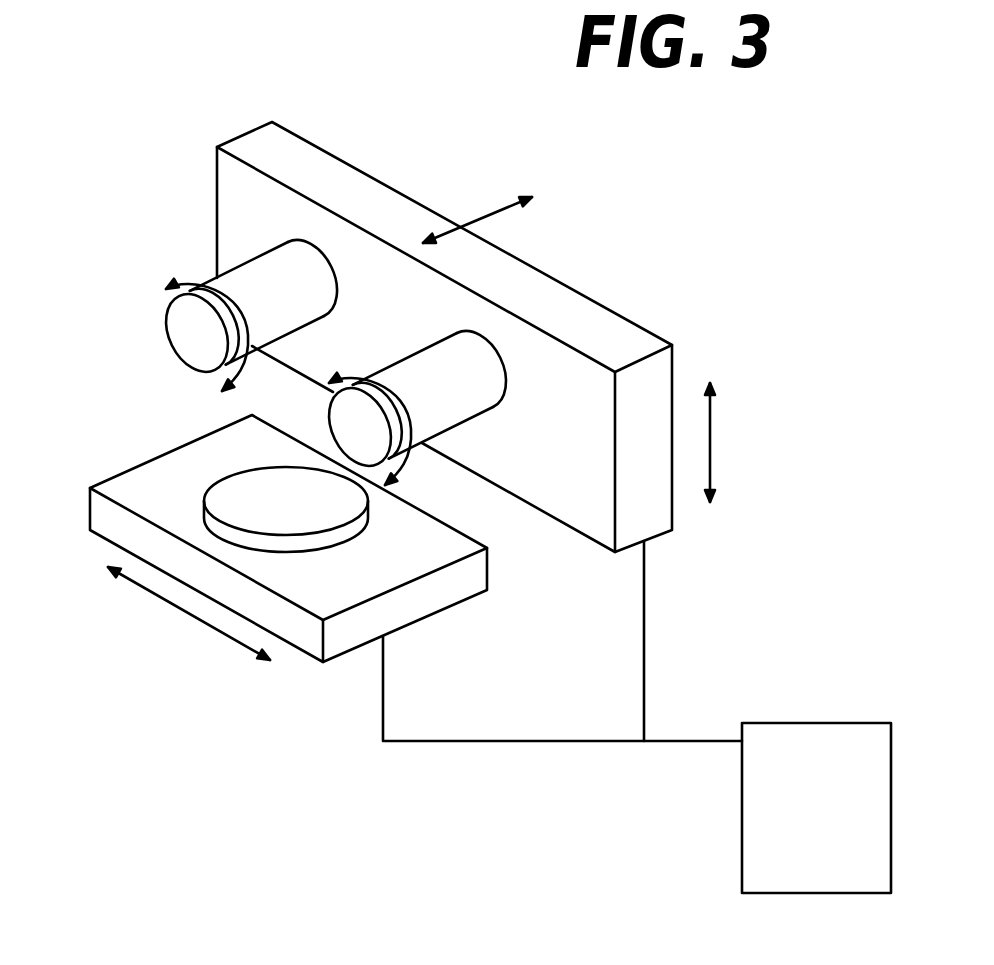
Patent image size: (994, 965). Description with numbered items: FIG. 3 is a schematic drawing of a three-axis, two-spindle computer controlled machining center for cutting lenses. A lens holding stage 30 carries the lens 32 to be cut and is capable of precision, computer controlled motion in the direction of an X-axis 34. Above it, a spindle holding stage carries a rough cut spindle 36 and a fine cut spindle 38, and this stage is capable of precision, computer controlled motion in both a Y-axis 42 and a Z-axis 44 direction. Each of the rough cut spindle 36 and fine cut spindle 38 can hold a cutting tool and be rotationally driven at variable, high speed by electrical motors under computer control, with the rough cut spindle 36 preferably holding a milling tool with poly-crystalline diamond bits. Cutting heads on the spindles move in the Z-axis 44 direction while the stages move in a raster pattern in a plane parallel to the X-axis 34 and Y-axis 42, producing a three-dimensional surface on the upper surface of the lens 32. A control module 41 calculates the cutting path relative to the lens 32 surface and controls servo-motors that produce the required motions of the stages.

The lens holding stage 30 is at (418, 602).
The lens 32 is at (218, 492).
The X-axis 34 is at (148, 590).
The rough cut spindle 36 is at (477, 372).
The fine cut spindle 38 is at (293, 255).
The control module 41 is at (740, 824).
The Y-axis 42 is at (488, 217).
The Z-axis 44 is at (713, 413).